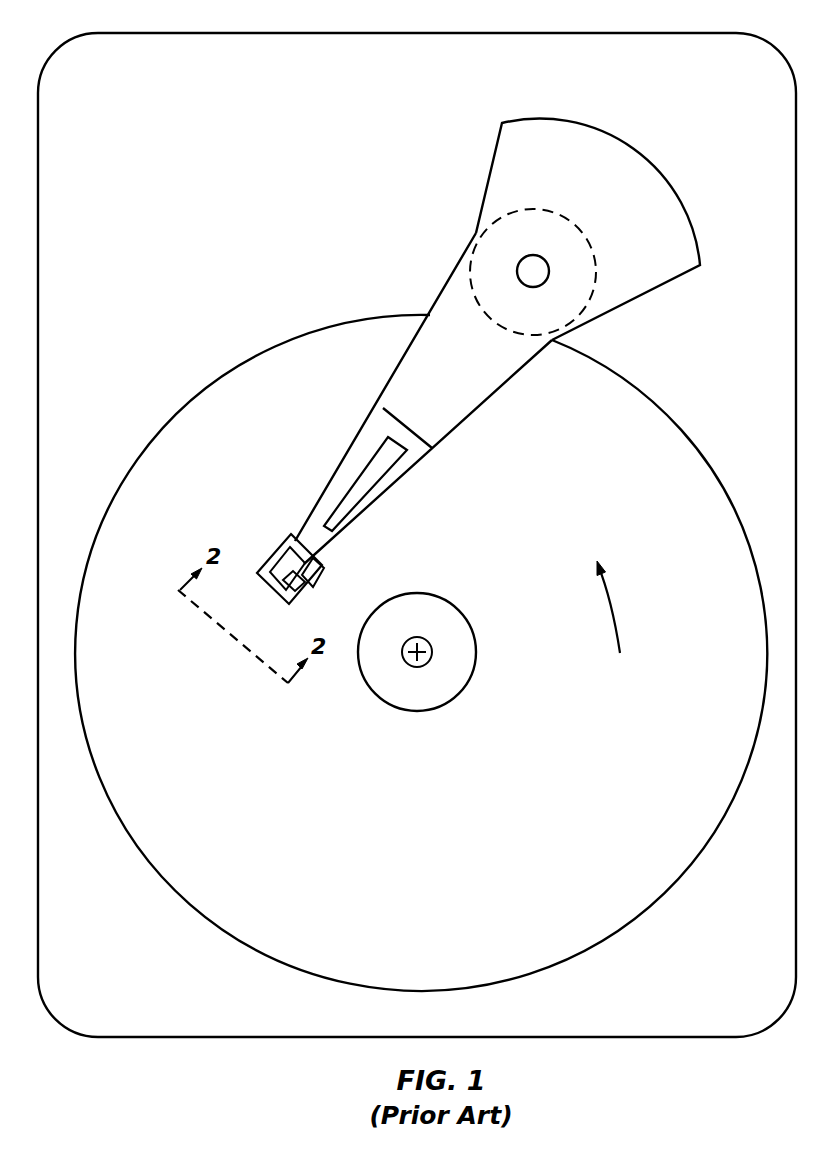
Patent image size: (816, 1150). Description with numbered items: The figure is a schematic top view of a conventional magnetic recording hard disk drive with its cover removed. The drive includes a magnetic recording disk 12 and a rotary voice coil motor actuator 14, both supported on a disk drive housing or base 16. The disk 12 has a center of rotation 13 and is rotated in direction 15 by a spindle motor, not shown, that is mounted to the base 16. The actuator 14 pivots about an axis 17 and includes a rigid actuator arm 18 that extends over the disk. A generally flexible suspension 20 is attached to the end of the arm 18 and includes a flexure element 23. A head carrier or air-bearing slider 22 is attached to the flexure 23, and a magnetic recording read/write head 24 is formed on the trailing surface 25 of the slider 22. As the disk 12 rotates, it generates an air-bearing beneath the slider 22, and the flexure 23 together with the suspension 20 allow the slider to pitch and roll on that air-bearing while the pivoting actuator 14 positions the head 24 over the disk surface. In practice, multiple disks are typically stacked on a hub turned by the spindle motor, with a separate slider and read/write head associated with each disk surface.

The magnetic recording disk 12 is at (428, 899).
The center of rotation 13 is at (432, 646).
The rotary voice coil motor (VCM) actuator 14 is at (636, 146).
The direction of rotation 15 is at (618, 621).
The disk drive housing or base 16 is at (676, 33).
The axis 17 is at (517, 270).
The rigid actuator arm 18 is at (413, 361).
The suspension 20 is at (368, 442).
The air-bearing slider 22 is at (285, 543).
The flexure element 23 is at (313, 578).
The read/write head 24 is at (295, 598).
The trailing surface 25 is at (268, 585).